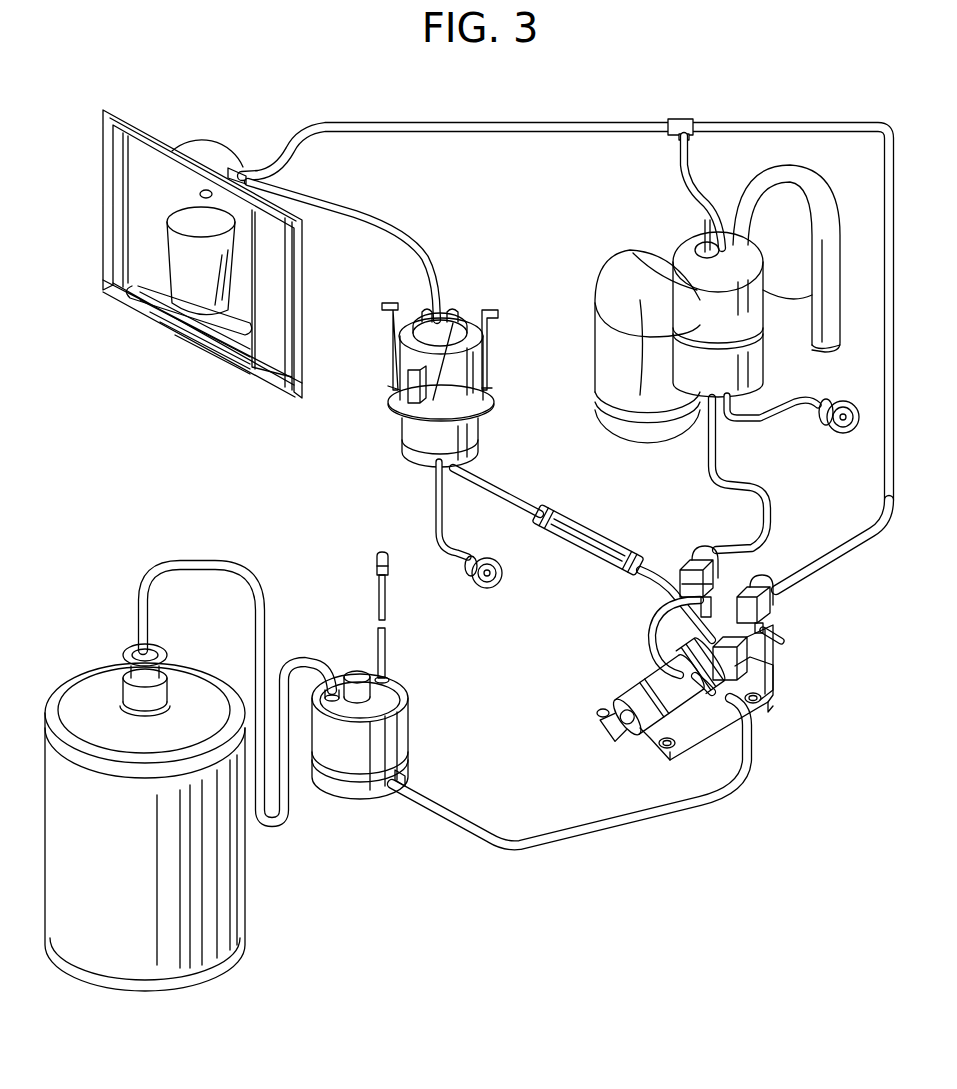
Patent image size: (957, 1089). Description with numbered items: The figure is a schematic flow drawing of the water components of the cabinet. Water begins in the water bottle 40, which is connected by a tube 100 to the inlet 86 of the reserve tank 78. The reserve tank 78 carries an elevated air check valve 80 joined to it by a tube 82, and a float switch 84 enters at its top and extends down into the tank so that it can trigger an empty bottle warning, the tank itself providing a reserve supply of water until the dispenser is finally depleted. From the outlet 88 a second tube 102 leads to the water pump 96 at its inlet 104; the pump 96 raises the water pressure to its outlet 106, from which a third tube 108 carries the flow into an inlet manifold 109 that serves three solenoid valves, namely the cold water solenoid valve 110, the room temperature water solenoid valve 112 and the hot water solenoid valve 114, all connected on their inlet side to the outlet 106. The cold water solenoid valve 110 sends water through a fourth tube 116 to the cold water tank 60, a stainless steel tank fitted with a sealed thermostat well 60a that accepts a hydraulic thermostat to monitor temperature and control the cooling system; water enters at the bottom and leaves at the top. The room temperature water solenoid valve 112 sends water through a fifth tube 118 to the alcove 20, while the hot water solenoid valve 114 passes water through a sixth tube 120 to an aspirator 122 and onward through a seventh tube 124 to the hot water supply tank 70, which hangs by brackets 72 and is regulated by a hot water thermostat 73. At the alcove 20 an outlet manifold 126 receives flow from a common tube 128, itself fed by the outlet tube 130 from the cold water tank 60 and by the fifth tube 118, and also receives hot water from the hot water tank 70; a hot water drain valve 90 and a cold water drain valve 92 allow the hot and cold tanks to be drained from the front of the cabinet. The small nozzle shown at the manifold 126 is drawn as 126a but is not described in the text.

The alcove 20 is at (140, 109).
The water bottle 40 is at (63, 688).
The cold water tank 60 is at (738, 366).
The thermostat well 60a is at (706, 222).
The hot water supply tank 70 is at (472, 428).
The brackets 72 is at (486, 310).
The hot water thermostat 73 is at (406, 390).
The reserve tank 78 is at (360, 795).
The air check valve 80 is at (376, 558).
The tube 82 is at (378, 600).
The float switch 84 is at (357, 674).
The inlet 86 is at (338, 688).
The outlet 88 is at (400, 772).
The hot water drain valve 90 is at (472, 584).
The cold water drain valve 92 is at (845, 400).
The water pump 96 is at (650, 696).
The tube 100 is at (209, 557).
The second tube 102 is at (462, 822).
The inlet 104 is at (724, 698).
The outlet 106 is at (688, 662).
The third tube 108 is at (652, 622).
The inlet manifold 109 is at (790, 632).
The cold water solenoid valve 110 is at (688, 562).
The room temperature water solenoid valve 112 is at (775, 608).
The hot water solenoid valve 114 is at (748, 650).
The fourth tube 116 is at (735, 458).
The fifth tube 118 is at (850, 548).
The sixth tube 120 is at (657, 580).
The aspirator 122 is at (575, 534).
The seventh tube 124 is at (515, 497).
The outlet manifold 126 is at (226, 166).
The dispensing nozzle 126a is at (200, 193).
The common tube 128 is at (500, 122).
The outlet tube 130 is at (352, 212).